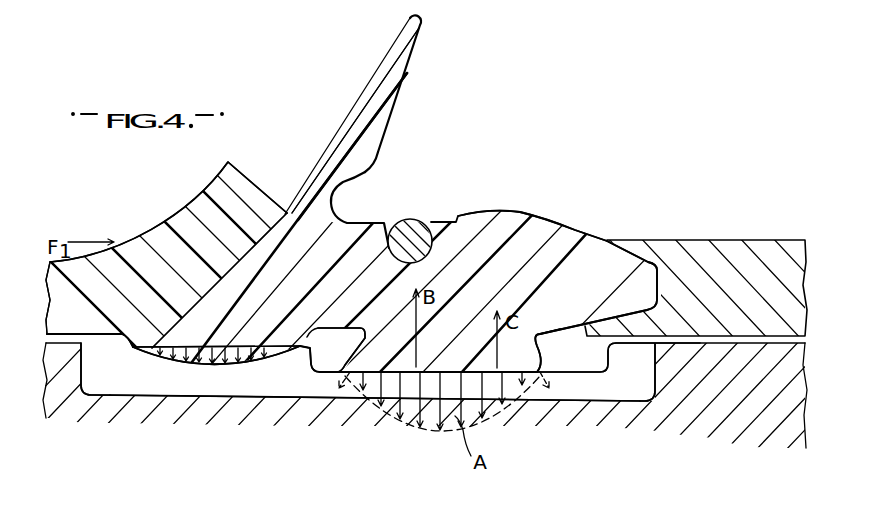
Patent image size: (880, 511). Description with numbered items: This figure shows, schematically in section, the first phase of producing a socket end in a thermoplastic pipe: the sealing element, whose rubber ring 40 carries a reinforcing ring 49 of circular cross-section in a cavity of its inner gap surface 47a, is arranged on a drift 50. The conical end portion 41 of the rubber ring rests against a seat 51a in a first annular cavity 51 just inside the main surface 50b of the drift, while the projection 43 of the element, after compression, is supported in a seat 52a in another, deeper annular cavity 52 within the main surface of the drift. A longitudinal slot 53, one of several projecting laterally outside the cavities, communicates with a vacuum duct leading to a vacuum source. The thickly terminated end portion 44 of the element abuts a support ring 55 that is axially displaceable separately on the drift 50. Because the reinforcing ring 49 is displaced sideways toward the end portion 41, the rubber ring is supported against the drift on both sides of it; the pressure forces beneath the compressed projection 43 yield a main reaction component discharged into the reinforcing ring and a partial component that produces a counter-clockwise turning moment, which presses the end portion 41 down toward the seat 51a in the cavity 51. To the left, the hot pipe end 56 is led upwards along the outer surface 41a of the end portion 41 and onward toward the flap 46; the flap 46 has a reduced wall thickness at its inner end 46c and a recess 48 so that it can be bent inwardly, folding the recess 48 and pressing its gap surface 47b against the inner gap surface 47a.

The rubber ring 40 is at (351, 237).
The conical end portion 41 is at (157, 333).
The outer surface of the conical end portion 41a is at (168, 310).
The projection 43 is at (437, 378).
The terminating end portion 44 is at (612, 270).
The flap 46 is at (385, 92).
The inner end of the flap 46c is at (327, 188).
The inner gap surface 47a is at (496, 222).
The gap surface 47b is at (388, 146).
The recess 48 is at (355, 203).
The reinforcing ring 49 is at (412, 228).
The drift 50 is at (168, 412).
The main surface of the drift 50b is at (82, 344).
The first annular cavity 51 is at (131, 349).
The seat 51a is at (305, 352).
The deeper annular cavity 52 is at (603, 362).
The seat 52a is at (546, 340).
The longitudinal slot 53 is at (230, 397).
The support ring 55 is at (717, 262).
The hot pipe end 56 is at (238, 200).